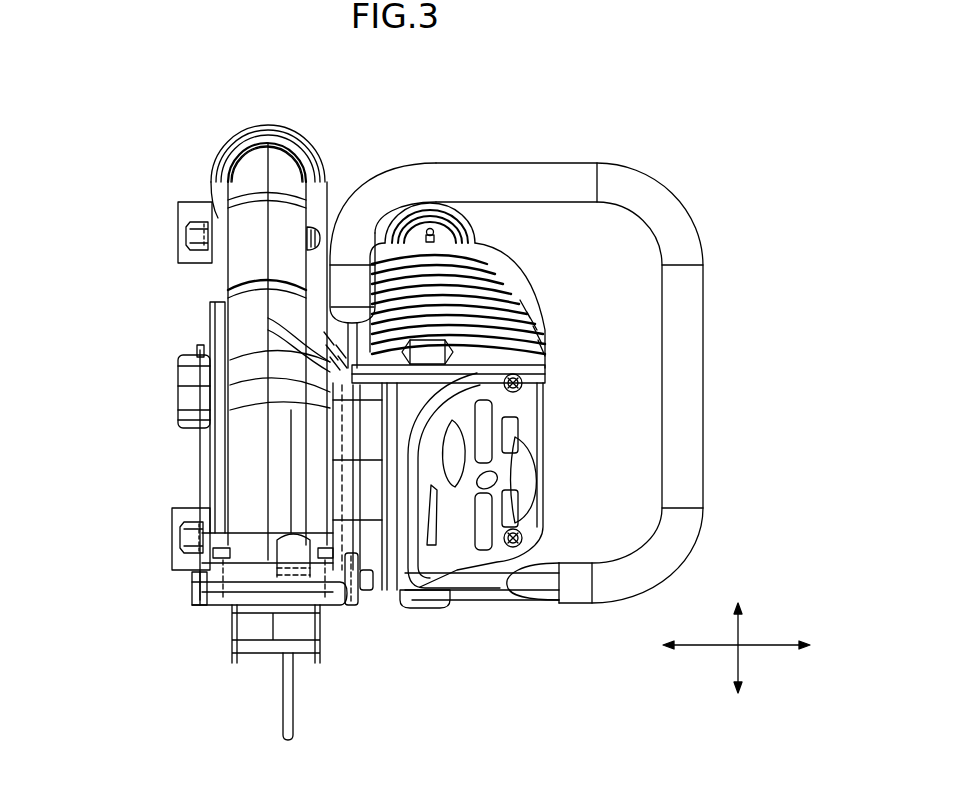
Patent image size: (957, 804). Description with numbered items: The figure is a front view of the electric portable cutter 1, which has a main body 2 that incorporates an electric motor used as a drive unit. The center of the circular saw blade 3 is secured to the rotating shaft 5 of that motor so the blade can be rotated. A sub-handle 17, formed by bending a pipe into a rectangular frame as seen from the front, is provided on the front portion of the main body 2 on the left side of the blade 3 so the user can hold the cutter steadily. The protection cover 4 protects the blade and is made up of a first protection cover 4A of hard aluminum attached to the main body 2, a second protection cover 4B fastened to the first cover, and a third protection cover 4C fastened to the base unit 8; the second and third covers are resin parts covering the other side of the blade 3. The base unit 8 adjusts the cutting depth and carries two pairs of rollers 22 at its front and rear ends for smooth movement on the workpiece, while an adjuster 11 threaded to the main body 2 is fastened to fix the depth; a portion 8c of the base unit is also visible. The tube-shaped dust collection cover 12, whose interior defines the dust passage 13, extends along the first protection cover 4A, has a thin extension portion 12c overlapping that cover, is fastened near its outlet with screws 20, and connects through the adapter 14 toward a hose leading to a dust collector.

The electric portable cutter 1 is at (532, 125).
The main body 2 is at (548, 301).
The circular saw blade 3 is at (274, 701).
The protection cover 4 is at (230, 435).
The first protection cover 4A is at (247, 252).
The second protection cover 4B is at (232, 279).
The third protection cover 4C is at (197, 357).
The rotating shaft 5 is at (358, 503).
The base unit 8 is at (206, 610).
The bracket leg portion 8c is at (297, 603).
The adjuster 11 is at (168, 534).
The dust collection cover 12 is at (273, 150).
The extension portion 12c is at (345, 178).
The dust passage 13 is at (253, 183).
The adapter 14 is at (212, 142).
The sub-handle 17 is at (681, 178).
The screws 20 is at (172, 237).
The rollers 22 is at (184, 590).